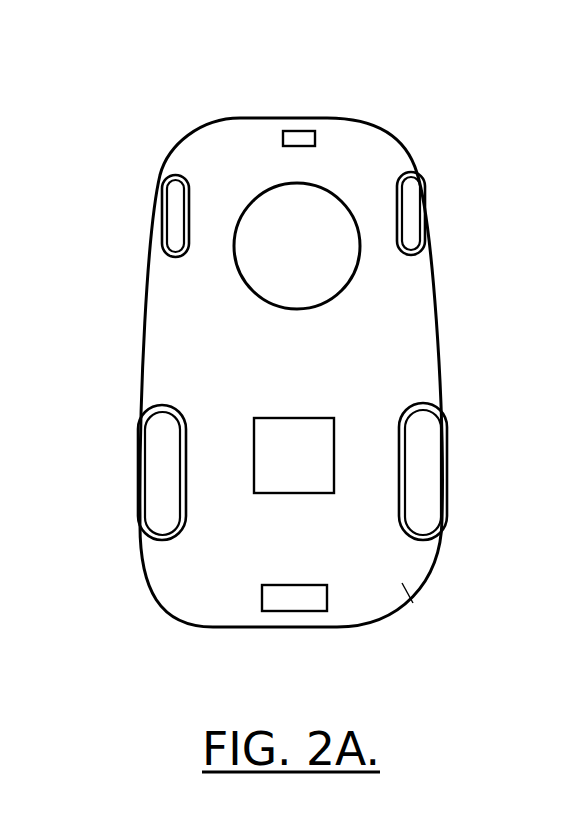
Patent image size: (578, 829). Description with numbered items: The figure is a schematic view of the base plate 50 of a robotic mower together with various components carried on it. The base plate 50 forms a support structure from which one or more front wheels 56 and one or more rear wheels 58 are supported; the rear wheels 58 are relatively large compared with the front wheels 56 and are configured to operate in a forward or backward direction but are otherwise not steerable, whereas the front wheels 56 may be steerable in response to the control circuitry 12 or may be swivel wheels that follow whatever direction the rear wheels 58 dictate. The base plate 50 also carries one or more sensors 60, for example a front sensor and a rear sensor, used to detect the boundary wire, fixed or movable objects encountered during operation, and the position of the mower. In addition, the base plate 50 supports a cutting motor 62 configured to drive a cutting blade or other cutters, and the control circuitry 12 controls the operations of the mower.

The control circuitry 12 is at (288, 447).
The base plate 50 is at (182, 362).
The front wheels 56 is at (177, 202).
The rear wheels 58 is at (168, 463).
The sensors 60 is at (280, 137).
The cutting motor 62 is at (293, 217).